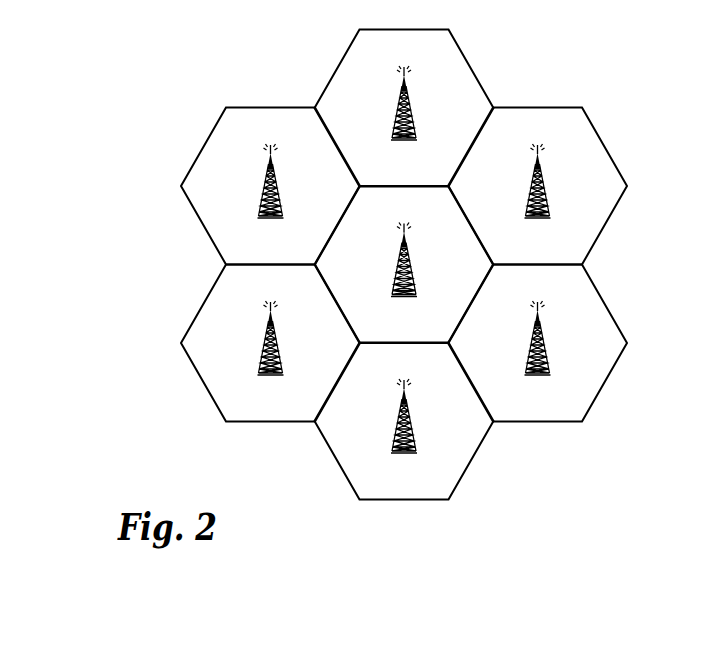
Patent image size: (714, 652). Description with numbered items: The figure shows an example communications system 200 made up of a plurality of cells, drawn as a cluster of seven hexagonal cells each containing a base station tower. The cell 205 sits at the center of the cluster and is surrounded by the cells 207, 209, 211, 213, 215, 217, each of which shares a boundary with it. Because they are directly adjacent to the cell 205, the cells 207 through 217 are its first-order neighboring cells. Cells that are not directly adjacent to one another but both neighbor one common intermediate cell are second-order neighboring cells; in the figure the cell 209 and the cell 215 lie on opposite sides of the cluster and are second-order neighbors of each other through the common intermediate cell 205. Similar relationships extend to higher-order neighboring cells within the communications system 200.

The communications system 200 is at (96, 62).
The cell 205 is at (396, 264).
The cell 207 is at (530, 342).
The cell 209 is at (530, 185).
The cell 211 is at (396, 107).
The cell 213 is at (262, 185).
The cell 215 is at (262, 342).
The cell 217 is at (396, 420).